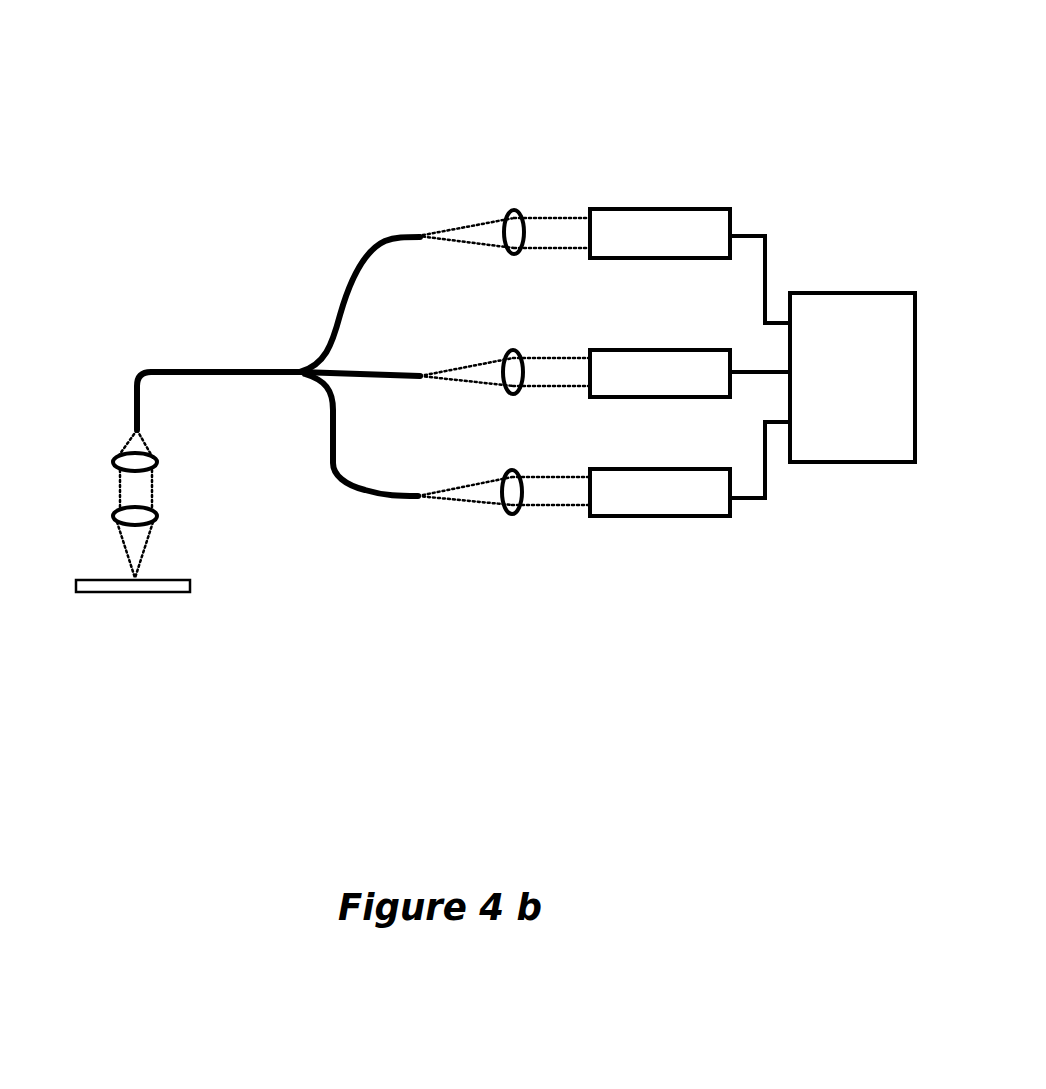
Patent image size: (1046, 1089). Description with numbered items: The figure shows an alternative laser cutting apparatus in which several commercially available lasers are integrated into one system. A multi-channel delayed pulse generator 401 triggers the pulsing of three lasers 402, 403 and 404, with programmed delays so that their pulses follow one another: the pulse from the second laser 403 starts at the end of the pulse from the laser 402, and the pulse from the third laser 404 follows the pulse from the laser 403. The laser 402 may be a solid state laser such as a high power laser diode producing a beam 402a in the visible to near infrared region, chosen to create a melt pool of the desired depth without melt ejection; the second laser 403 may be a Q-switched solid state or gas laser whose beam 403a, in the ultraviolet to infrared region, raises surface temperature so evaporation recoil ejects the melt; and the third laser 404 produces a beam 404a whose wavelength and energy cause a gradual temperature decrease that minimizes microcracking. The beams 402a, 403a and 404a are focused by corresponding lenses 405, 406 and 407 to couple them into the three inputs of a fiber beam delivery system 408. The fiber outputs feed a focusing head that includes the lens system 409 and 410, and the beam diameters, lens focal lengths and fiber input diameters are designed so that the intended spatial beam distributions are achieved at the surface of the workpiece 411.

The multi-channel delayed pulse generator 401 is at (843, 462).
The laser 402 is at (662, 209).
The beam 402a is at (559, 214).
The second laser 403 is at (662, 350).
The laser beam 403a is at (540, 360).
The third laser 404 is at (668, 516).
The laser beam 404a is at (568, 498).
The lens 405 is at (512, 254).
The lens 406 is at (513, 394).
The lens 407 is at (512, 514).
The fiber beam delivery system 408 is at (332, 352).
The lens system 409 is at (113, 517).
The lens system 410 is at (157, 462).
The workpiece 411 is at (190, 588).